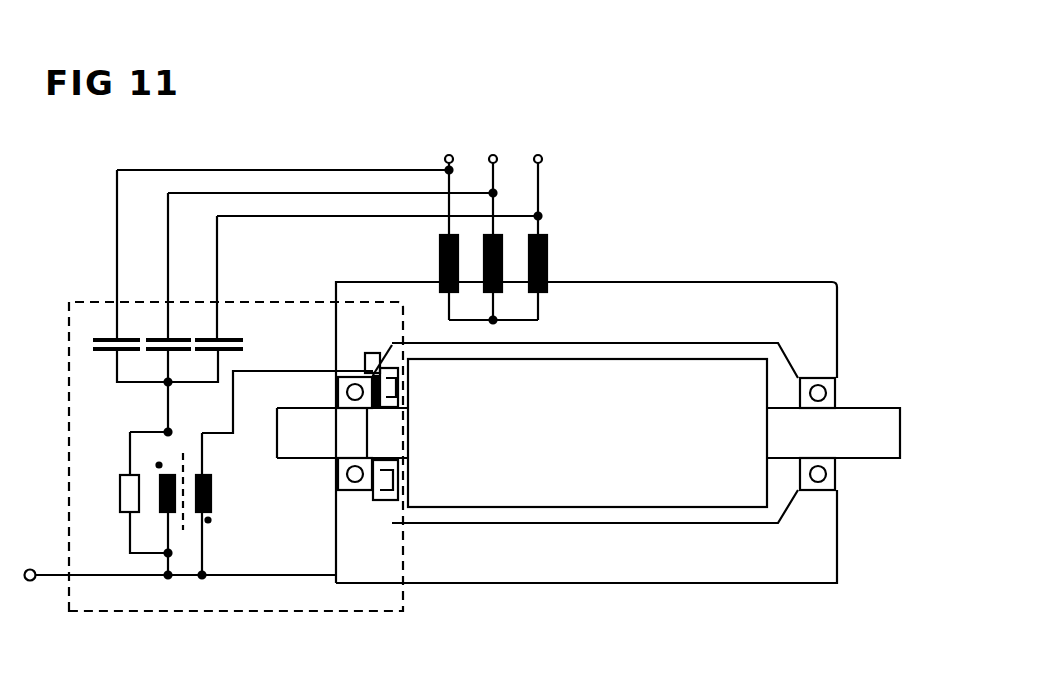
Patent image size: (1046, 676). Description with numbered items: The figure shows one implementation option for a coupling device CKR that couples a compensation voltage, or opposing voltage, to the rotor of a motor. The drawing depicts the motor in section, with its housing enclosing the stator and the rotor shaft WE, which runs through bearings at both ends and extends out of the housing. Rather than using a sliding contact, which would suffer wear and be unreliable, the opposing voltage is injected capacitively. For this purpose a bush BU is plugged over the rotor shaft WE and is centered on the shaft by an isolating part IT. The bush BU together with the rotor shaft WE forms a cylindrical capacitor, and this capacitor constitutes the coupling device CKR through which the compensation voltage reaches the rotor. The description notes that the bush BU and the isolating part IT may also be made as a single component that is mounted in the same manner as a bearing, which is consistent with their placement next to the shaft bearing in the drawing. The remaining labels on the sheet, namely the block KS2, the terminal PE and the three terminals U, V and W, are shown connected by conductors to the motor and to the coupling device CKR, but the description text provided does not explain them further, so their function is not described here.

The capacitor network / filter circuit KS2 is at (95, 301).
The protective earth terminal PE is at (181, 594).
The phase terminal U is at (287, 222).
The phase terminal V is at (335, 222).
The phase terminal W is at (384, 222).
The rotor shaft WE is at (868, 408).
The isolating part IT is at (385, 387).
The coupling device CKR is at (365, 357).
The bush BU is at (383, 497).